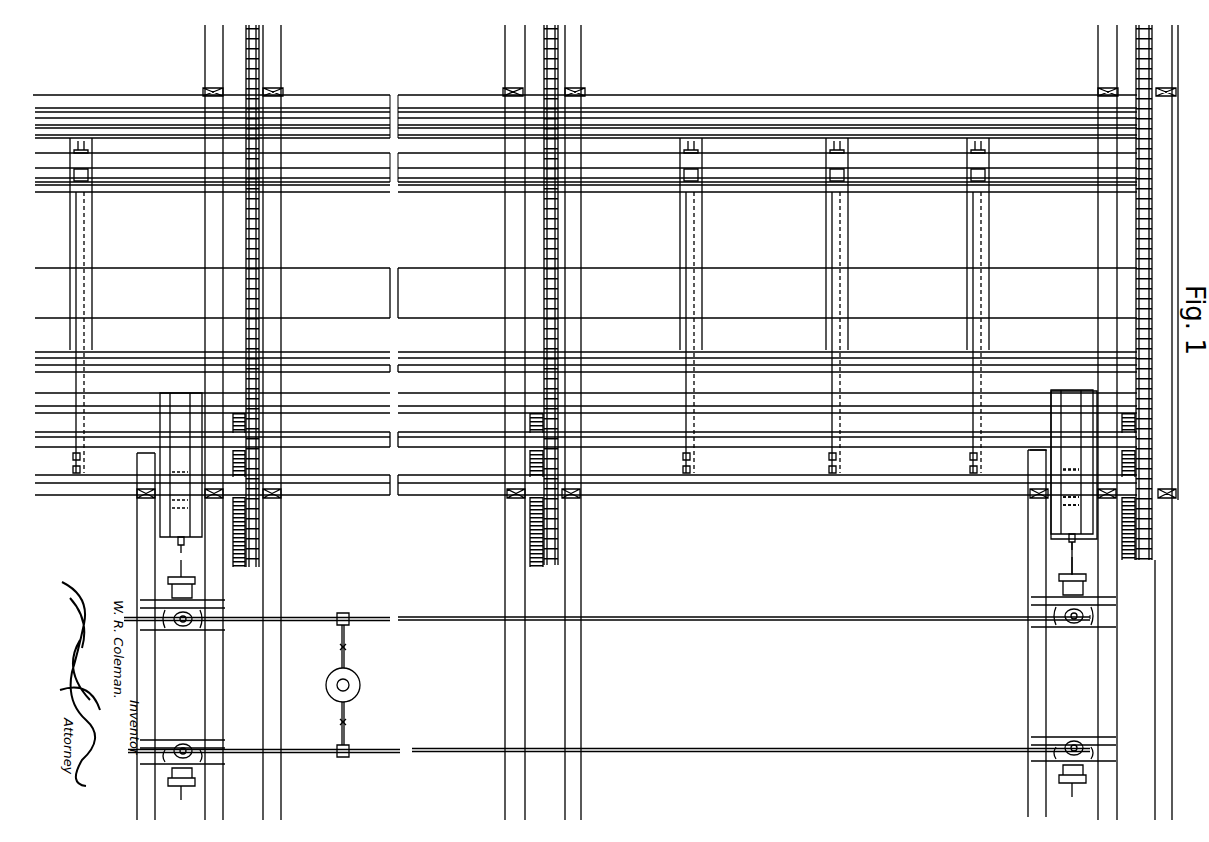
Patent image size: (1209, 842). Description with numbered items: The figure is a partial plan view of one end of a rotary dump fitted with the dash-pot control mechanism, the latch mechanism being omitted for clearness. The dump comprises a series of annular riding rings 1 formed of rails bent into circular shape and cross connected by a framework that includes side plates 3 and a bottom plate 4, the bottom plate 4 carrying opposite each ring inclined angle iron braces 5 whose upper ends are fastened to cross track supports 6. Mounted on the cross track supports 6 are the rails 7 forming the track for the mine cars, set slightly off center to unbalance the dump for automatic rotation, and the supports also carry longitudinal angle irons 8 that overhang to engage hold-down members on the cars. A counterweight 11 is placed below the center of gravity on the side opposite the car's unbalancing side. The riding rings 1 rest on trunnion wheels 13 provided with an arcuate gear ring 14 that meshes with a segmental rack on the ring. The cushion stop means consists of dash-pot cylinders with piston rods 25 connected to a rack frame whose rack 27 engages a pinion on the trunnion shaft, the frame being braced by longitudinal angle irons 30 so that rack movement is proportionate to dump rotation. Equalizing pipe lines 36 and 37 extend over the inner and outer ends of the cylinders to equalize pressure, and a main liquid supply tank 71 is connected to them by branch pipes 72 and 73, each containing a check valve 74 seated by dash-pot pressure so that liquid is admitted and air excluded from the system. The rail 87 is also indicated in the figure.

The riding ring 1 is at (555, 466).
The side plate 3 is at (805, 490).
The bottom plate 4 is at (758, 270).
The inclined angle iron brace 5 is at (692, 242).
The cross track support 6 is at (563, 259).
The rail 7 is at (628, 193).
The longitudinal angle iron 8 is at (755, 375).
The counterweight 11 is at (770, 468).
The trunnion wheel 13 is at (545, 527).
The gear ring 14 is at (525, 546).
The piston rod 25 is at (1065, 556).
The rack 27 is at (1075, 521).
The longitudinal angle iron 30 is at (1056, 501).
The equalizing pipe line 36 is at (666, 616).
The equalizing pipe line 37 is at (661, 750).
The main liquid supply tank 71 is at (360, 685).
The branch pipe 72 is at (348, 664).
The branch pipe 73 is at (348, 706).
The check valve 74 is at (350, 647).
The rail 87 is at (798, 161).